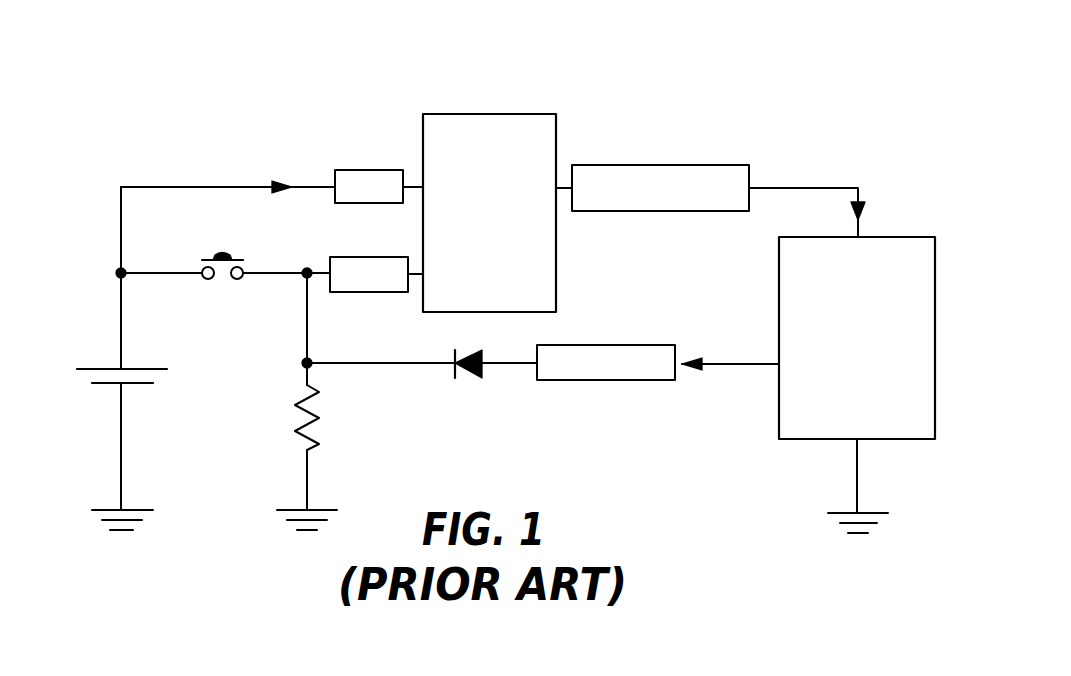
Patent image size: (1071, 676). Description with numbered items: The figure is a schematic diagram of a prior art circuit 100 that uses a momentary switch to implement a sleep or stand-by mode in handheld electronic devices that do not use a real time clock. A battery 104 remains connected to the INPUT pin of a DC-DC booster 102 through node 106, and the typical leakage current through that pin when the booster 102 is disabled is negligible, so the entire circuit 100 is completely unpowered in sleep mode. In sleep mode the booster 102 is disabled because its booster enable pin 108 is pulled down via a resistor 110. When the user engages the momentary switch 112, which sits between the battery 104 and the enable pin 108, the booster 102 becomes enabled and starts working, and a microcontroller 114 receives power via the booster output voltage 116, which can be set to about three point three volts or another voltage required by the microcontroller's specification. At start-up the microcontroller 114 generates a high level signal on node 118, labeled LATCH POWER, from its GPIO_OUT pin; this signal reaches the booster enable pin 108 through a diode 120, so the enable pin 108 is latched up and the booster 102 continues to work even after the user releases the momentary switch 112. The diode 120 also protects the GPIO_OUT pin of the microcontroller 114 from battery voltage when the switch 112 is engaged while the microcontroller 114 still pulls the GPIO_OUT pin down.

The circuit 100 is at (737, 87).
The DC-DC booster 102 is at (557, 142).
The battery 104 is at (92, 368).
The node 106 is at (305, 186).
The booster enable pin 108 is at (316, 272).
The resistor 110 is at (315, 410).
The momentary switch 112 is at (222, 253).
The microcontroller 114 is at (779, 258).
The booster output voltage 116 is at (838, 186).
The node 118 is at (758, 362).
The diode 120 is at (462, 371).